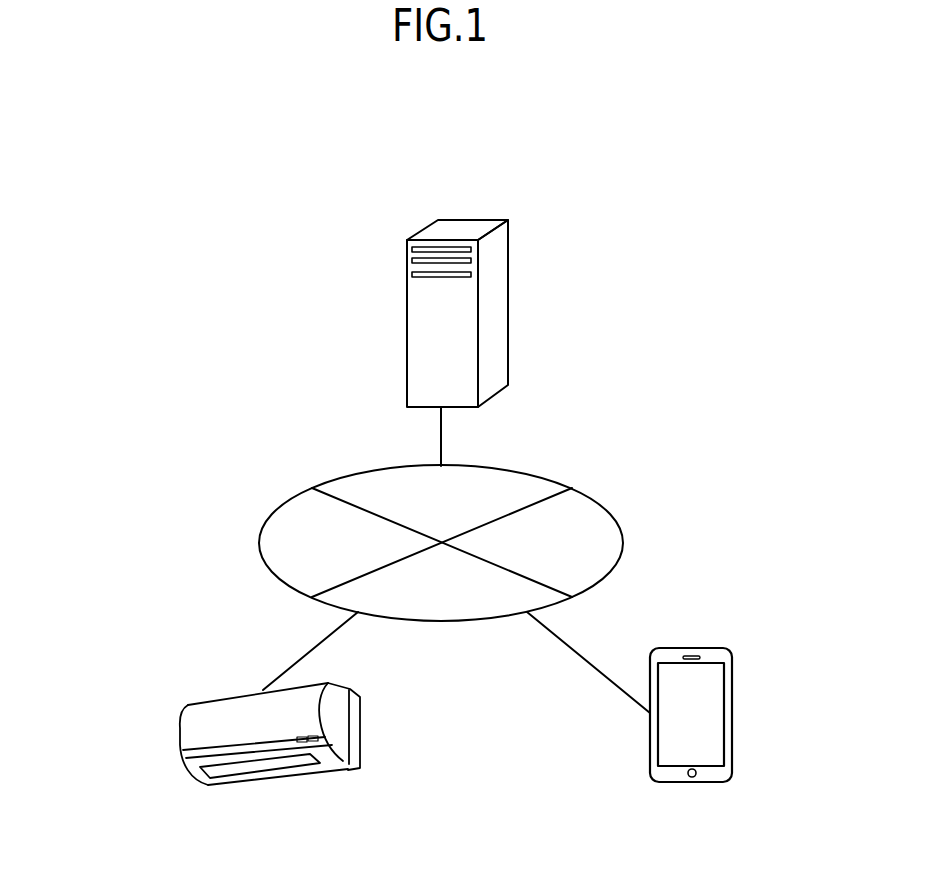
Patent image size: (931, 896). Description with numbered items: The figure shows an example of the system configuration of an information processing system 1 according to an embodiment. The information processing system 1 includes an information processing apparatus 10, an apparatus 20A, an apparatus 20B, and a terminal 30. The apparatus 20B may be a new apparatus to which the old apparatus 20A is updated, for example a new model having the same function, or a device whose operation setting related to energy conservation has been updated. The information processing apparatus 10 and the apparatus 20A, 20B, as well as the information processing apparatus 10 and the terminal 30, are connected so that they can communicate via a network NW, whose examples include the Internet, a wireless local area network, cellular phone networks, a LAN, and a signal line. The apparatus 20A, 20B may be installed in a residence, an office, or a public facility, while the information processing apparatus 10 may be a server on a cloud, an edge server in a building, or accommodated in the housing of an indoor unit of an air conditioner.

The information processing system 1 is at (628, 191).
The information processing apparatus 10 is at (470, 220).
The network NW is at (527, 473).
The apparatus 20A is at (205, 745).
The apparatus 20B is at (190, 777).
The terminal 30 is at (713, 783).